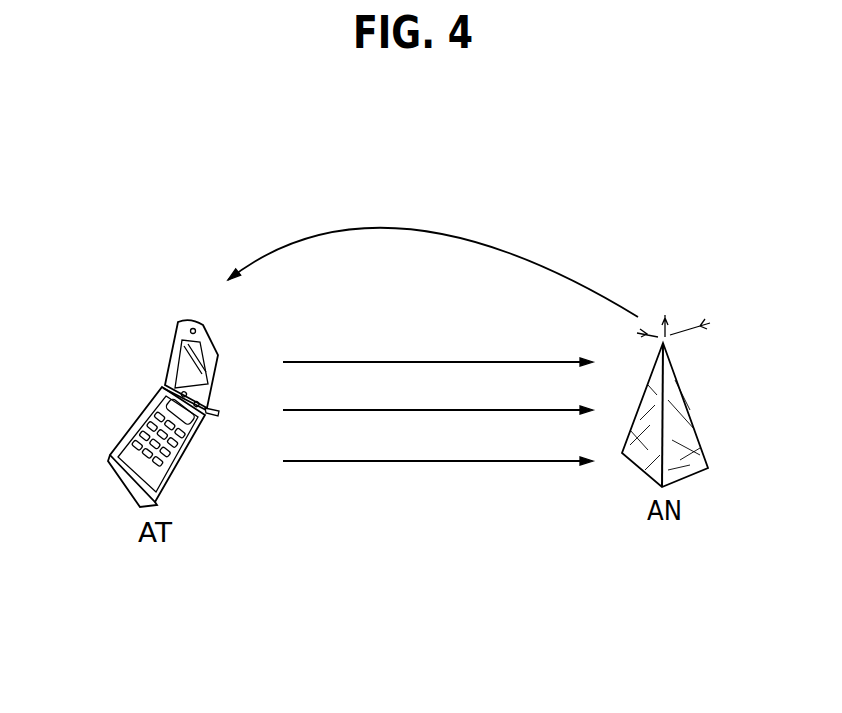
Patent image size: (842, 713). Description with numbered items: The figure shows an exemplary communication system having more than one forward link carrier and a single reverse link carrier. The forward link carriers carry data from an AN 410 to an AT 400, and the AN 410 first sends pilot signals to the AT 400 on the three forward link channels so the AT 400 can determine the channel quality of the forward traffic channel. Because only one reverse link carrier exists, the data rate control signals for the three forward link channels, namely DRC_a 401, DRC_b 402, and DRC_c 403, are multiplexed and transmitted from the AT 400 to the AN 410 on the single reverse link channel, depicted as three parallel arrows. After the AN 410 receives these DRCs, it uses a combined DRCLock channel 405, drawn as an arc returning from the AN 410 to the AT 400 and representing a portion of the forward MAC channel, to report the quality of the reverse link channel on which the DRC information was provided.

The AT 400 is at (141, 409).
The DRC_a 401 is at (500, 362).
The DRC_b 402 is at (478, 410).
The DRC_c 403 is at (478, 461).
The combined DRCLock channel 405 is at (433, 253).
The AN 410 is at (683, 400).